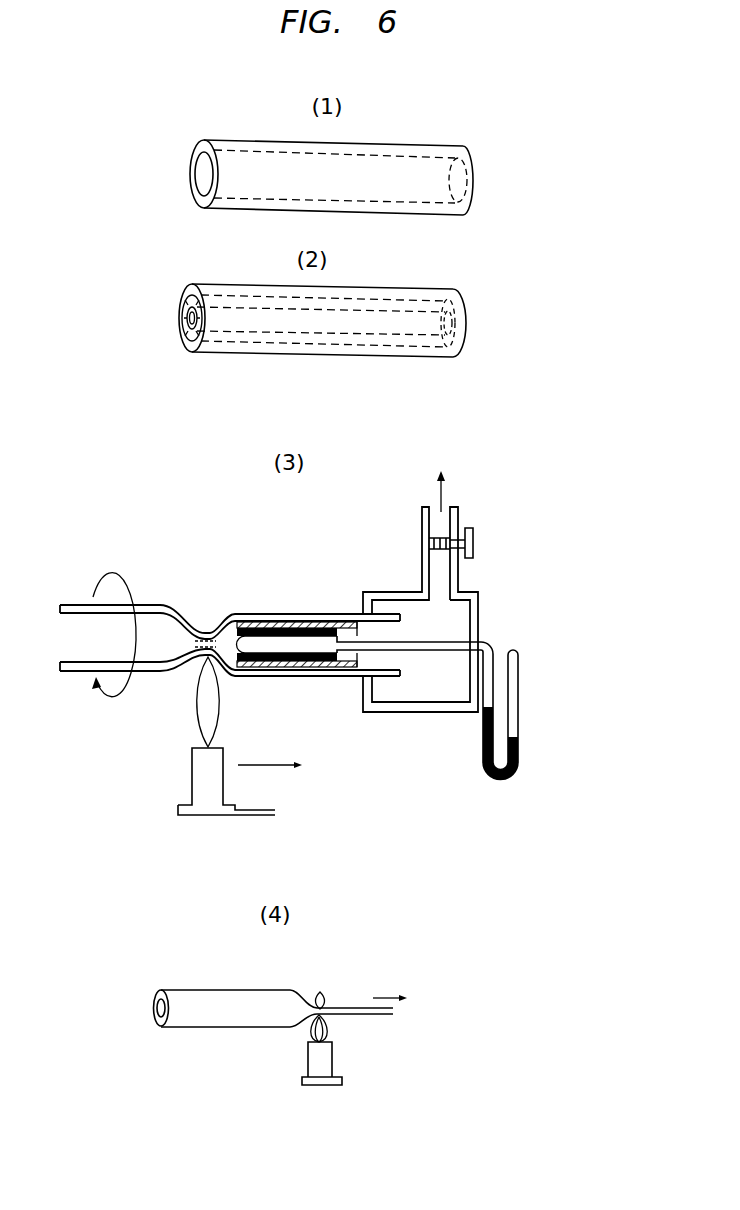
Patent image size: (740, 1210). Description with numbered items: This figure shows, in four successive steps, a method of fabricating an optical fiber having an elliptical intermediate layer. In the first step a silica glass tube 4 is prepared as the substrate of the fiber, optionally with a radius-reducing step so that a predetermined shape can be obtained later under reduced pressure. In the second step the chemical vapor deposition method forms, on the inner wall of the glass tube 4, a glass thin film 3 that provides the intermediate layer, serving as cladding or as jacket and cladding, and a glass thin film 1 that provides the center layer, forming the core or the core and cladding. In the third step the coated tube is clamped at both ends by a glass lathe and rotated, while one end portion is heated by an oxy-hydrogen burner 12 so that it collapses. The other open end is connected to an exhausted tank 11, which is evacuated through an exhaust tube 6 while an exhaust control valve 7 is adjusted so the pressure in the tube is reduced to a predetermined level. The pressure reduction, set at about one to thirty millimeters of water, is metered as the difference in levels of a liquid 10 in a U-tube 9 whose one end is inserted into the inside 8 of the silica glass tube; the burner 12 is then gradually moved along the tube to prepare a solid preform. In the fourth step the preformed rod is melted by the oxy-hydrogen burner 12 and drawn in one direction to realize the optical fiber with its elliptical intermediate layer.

The glass thin film 1 is at (187, 322).
The glass thin film 3 is at (186, 309).
The glass tube 4 is at (203, 140).
The exhaust tube 6 is at (445, 481).
The exhaust control valve 7 is at (473, 537).
The inside of the silica glass tube 8 is at (320, 640).
The U-tube 9 is at (513, 653).
The liquid 10 is at (518, 752).
The exhausted tank 11 is at (428, 693).
The oxy-hydrogen burner 12 is at (187, 747).